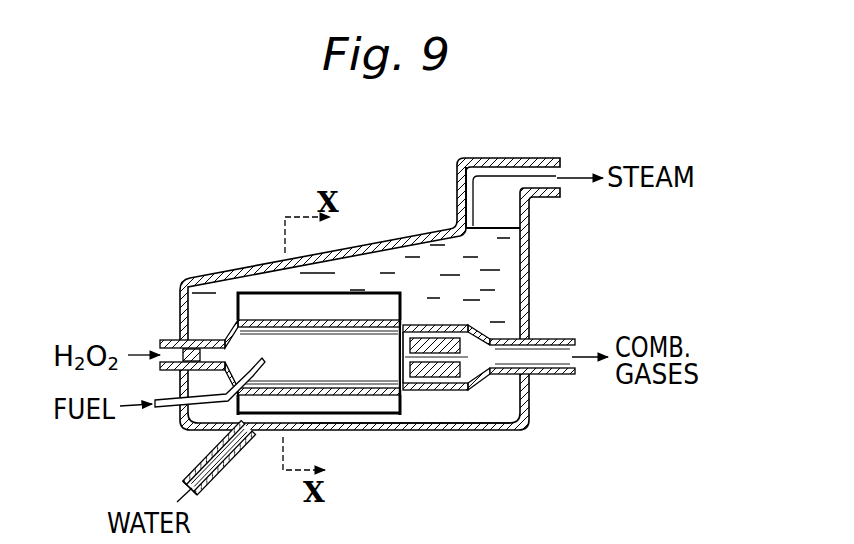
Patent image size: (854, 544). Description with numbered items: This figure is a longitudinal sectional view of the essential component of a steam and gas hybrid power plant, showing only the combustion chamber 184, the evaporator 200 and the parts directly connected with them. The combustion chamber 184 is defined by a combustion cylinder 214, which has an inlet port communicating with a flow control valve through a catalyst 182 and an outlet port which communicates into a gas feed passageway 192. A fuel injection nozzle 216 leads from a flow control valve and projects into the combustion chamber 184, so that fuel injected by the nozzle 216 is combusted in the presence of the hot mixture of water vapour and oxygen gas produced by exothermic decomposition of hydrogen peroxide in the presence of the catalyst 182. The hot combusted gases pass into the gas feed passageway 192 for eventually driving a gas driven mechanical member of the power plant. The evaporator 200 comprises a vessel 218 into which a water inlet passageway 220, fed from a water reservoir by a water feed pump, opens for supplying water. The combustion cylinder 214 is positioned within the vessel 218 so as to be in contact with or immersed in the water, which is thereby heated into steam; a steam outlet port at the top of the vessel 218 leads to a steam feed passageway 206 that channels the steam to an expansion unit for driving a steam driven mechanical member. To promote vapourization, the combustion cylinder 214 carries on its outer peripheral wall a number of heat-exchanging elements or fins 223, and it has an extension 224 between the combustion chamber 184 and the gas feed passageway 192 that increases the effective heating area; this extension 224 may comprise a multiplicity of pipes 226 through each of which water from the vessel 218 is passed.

The catalyst 182 is at (207, 340).
The combustion chamber 184 is at (345, 375).
The gas feed passageway 192 is at (543, 338).
The evaporator 200 is at (545, 229).
The steam feed passageway 206 is at (512, 157).
The combustion cylinder 214 is at (262, 320).
The fuel injection nozzle 216 is at (200, 407).
The vessel 218 is at (483, 432).
The water inlet passageway 220 is at (217, 482).
The heat-exchanging elements or fins 223 is at (380, 415).
The extension 224 is at (473, 380).
The pipes 226 is at (433, 330).